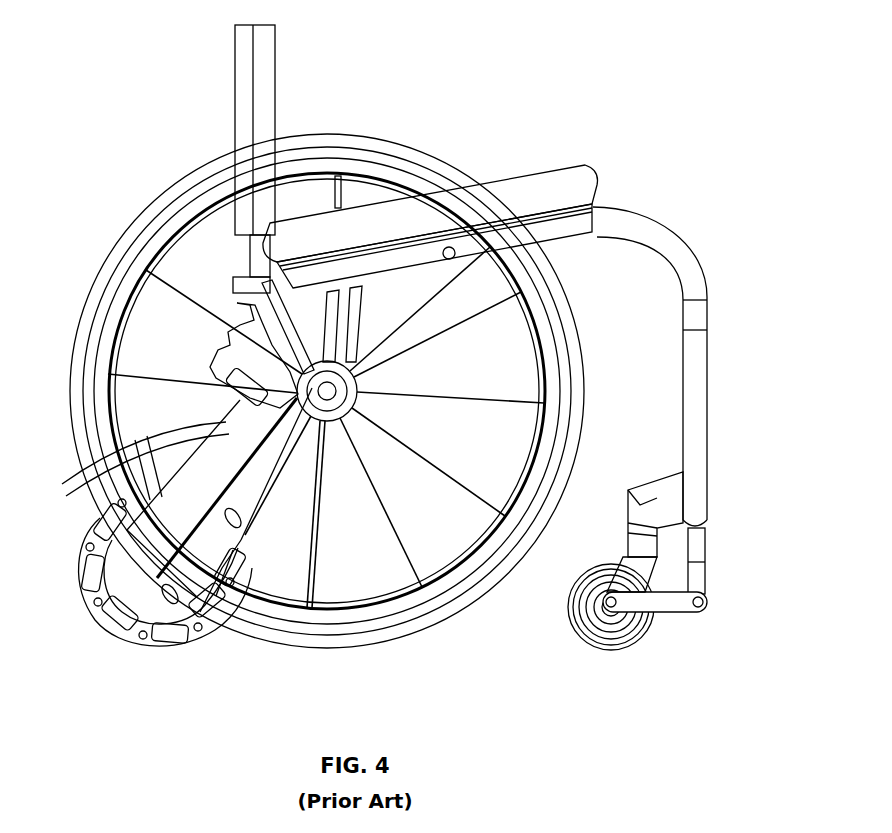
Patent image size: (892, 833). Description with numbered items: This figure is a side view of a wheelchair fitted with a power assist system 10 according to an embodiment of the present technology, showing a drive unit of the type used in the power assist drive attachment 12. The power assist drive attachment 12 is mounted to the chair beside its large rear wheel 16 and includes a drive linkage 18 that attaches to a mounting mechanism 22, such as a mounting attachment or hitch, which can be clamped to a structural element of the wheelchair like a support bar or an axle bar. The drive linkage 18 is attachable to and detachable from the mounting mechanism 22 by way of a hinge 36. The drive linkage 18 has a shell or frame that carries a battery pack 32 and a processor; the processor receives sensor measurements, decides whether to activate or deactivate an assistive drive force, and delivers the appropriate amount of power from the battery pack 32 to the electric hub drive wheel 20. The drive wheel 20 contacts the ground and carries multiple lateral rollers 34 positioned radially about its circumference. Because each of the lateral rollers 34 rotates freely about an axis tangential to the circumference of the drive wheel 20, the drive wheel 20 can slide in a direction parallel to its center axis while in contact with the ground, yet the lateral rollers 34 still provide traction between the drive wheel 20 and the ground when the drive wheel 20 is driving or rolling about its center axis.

The power assist system 10 is at (492, 40).
The power assist drive attachment 12 is at (250, 552).
The rear wheel 16 is at (198, 180).
The drive linkage 18 is at (210, 466).
The electric hub drive wheel 20 is at (147, 647).
The mounting mechanism 22 is at (362, 285).
The battery pack 32 is at (598, 192).
The lateral rollers 34 is at (103, 426).
The hinge 36 is at (290, 368).